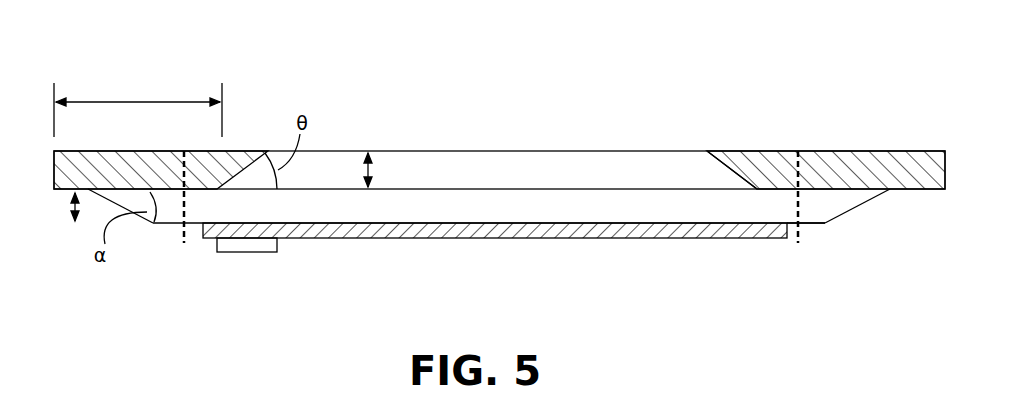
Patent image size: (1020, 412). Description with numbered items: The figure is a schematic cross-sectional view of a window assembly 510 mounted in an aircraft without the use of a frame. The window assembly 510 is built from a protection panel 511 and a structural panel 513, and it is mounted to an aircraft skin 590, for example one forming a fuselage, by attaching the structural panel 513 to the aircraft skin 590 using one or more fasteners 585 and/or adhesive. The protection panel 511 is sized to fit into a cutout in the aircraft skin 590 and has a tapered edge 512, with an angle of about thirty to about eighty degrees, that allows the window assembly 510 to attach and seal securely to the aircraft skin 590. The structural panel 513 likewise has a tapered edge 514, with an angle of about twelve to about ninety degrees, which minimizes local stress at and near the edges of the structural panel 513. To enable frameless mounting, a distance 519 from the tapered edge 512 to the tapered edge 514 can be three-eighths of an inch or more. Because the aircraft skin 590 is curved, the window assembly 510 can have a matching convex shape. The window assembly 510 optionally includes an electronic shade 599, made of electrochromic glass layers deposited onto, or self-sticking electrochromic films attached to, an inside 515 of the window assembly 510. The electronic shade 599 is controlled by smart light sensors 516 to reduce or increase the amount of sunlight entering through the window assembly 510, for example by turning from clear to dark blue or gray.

The window assembly 510 is at (499, 37).
The protection panel 511 is at (477, 141).
The tapered edge 512 is at (725, 142).
The structural panel 513 is at (153, 233).
The tapered edge 514 is at (868, 215).
The inside 515 is at (834, 234).
The smart light sensors 516 is at (283, 260).
The distance 519 is at (161, 132).
The fasteners 585 is at (195, 252).
The aircraft skin 590 is at (889, 142).
The electronic shade 599 is at (755, 246).